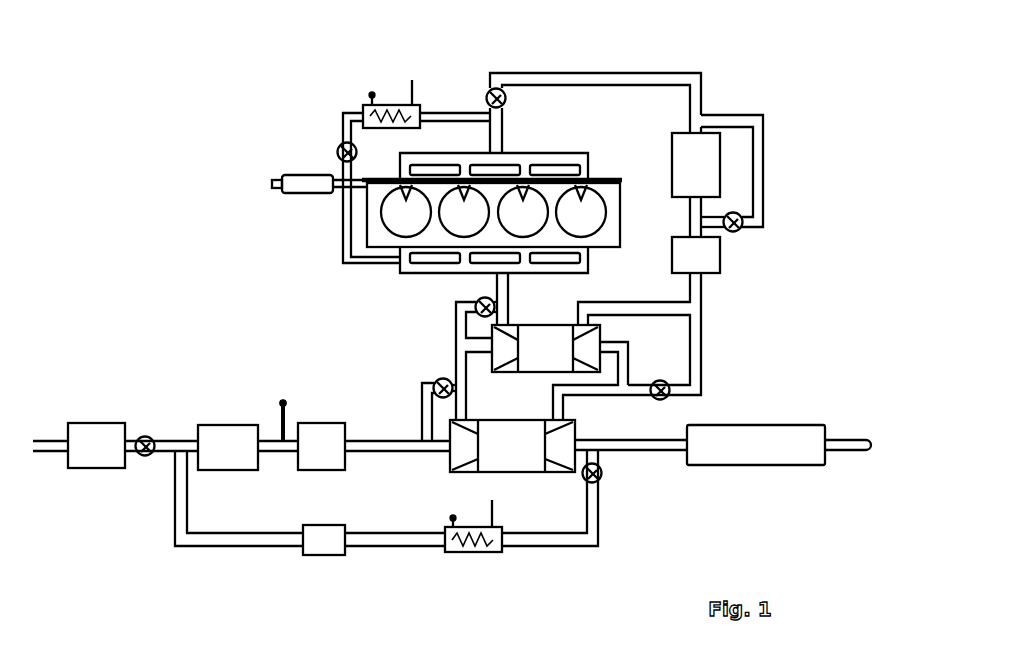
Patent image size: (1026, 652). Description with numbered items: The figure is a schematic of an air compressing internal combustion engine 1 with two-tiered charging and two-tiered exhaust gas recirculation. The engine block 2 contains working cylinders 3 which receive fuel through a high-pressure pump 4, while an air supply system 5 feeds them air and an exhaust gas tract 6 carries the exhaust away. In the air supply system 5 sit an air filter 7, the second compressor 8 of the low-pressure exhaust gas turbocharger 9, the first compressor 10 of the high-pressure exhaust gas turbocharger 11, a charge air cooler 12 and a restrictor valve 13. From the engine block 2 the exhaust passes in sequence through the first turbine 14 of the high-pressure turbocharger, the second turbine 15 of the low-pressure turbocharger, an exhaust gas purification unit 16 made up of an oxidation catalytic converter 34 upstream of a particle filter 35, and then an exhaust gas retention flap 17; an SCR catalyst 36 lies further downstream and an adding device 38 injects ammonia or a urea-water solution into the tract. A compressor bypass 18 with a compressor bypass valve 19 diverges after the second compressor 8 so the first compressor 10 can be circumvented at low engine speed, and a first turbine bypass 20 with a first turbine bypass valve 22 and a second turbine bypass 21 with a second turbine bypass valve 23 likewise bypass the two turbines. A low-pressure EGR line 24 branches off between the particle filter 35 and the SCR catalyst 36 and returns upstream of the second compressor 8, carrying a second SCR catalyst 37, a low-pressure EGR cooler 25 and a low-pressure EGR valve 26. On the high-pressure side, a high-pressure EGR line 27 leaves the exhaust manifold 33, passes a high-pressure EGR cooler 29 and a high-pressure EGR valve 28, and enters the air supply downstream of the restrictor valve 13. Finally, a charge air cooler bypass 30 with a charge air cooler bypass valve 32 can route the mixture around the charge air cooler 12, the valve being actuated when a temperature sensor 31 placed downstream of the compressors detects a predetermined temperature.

The internal combustion engine 1 is at (828, 56).
The engine block 2 is at (612, 175).
The working cylinders 3 is at (493, 211).
The high-pressure pump 4 is at (270, 188).
The air supply system 5 is at (722, 78).
The exhaust gas tract 6 is at (372, 304).
The air filter 7 is at (723, 445).
The second compressor 8 is at (558, 447).
The low-pressure exhaust gas turbocharger 9 is at (512, 446).
The first compressor 10 is at (603, 330).
The high-pressure exhaust gas turbocharger 11 is at (546, 322).
The charge air cooler 12 is at (696, 165).
The restrictor valve 13 is at (486, 92).
The first turbine 14 is at (506, 373).
The second turbine 15 is at (457, 473).
The exhaust gas purification unit 16 is at (214, 393).
The exhaust gas retention flap 17 is at (142, 458).
The compressor bypass 18 is at (703, 335).
The compressor bypass valve 19 is at (658, 399).
The first turbine bypass 20 is at (456, 318).
The second turbine bypass 21 is at (421, 410).
The first turbine bypass valve 22 is at (476, 302).
The second turbine bypass valve 23 is at (434, 381).
The low-pressure EGR line 24 is at (251, 546).
The low-pressure EGR cooler 25 is at (463, 553).
The low-pressure EGR valve 26 is at (603, 476).
The high-pressure EGR line 27 is at (341, 240).
The high-pressure EGR valve 28 is at (337, 150).
The high-pressure EGR cooler 29 is at (363, 112).
The charge air cooler bypass 30 is at (765, 149).
The temperature sensor 31 is at (696, 235).
The charge air cooler bypass valve 32 is at (742, 231).
The exhaust manifold 33 is at (590, 266).
The oxidation catalytic converter 34 is at (321, 446).
The particle filter 35 is at (228, 447).
The SCR catalyst 36 is at (96, 445).
The second SCR catalyst 37 is at (323, 556).
The adding device 38 is at (280, 401).